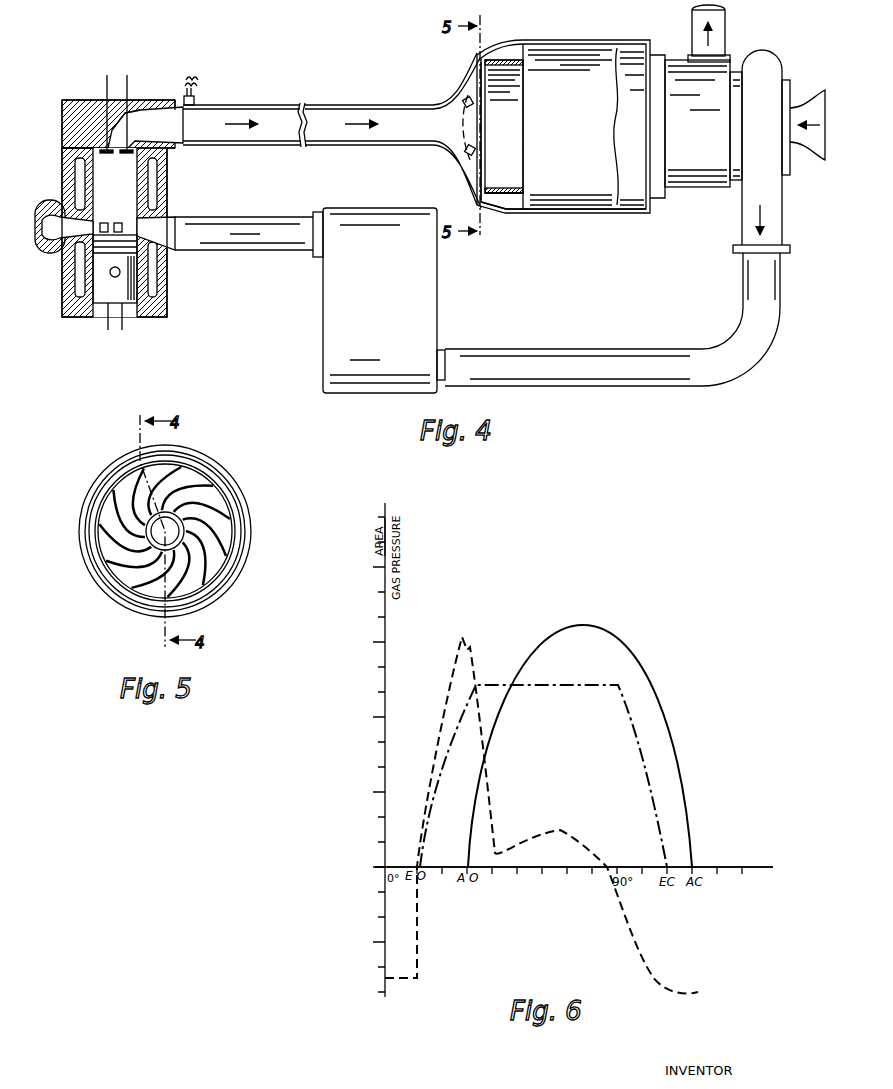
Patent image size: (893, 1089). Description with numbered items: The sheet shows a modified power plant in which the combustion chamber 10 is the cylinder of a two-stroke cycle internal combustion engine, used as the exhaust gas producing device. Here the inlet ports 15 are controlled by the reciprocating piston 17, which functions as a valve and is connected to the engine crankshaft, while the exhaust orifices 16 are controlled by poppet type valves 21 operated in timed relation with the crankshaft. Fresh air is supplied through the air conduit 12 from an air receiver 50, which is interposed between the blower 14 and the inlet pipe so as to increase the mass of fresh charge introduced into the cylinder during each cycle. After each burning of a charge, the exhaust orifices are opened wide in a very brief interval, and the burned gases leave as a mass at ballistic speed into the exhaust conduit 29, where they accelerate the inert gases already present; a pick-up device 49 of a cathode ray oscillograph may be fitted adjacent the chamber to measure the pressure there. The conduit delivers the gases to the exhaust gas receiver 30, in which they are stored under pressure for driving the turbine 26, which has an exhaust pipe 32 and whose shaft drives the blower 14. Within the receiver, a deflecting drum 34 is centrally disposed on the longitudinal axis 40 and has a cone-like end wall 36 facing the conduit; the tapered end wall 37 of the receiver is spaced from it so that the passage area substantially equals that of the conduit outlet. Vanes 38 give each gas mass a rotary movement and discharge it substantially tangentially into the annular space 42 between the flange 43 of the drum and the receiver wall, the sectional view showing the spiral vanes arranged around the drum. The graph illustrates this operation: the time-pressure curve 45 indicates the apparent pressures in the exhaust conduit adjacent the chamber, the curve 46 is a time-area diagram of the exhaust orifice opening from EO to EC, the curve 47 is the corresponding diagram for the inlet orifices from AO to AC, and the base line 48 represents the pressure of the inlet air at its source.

In FIG. 4, the combustion chamber 10 is at (170, 186).
In FIG. 4, the poppet type valve 21 is at (122, 88).
In FIG. 4, the exhaust orifice 16 is at (130, 136).
In FIG. 4, the inlet port 15 is at (143, 232).
In FIG. 4, the piston 17 is at (127, 307).
In FIG. 4, the exhaust conduit 29 is at (274, 107).
In FIG. 4, the pick-up device 49 is at (199, 103).
In FIG. 4, the air conduit 12 is at (262, 218).
In FIG. 4, the air receiver 50 is at (427, 309).
In FIG. 4, the exhaust gas receiver 30 is at (580, 210).
In FIG. 5, the exhaust gas receiver 30 is at (229, 482).
In FIG. 4, the annular space 42 is at (507, 201).
In FIG. 5, the annular space 42 is at (92, 556).
In FIG. 4, the deflecting drum 34 is at (526, 121).
In FIG. 5, the deflecting drum 34 is at (130, 576).
In FIG. 4, the cone-like end wall 36 is at (478, 148).
In FIG. 5, the cone-like end wall 36 is at (233, 569).
In FIG. 4, the vanes 38 is at (467, 158).
In FIG. 5, the vanes 38 is at (220, 534).
In FIG. 4, the end wall of receiver 37 is at (469, 173).
In FIG. 4, the flange of drum 43 is at (511, 191).
In FIG. 4, the longitudinal axis 40 is at (597, 159).
In FIG. 4, the turbine 26 is at (705, 186).
In FIG. 4, the exhaust pipe 32 is at (724, 31).
In FIG. 4, the blower 14 is at (770, 76).
In FIG. 6, the time-pressure curve 45 is at (473, 658).
In FIG. 6, the time-area diagram of exhaust orifices 46 is at (634, 726).
In FIG. 6, the time-area diagram of inlet orifices 47 is at (655, 690).
In FIG. 6, the base line 48 is at (722, 869).